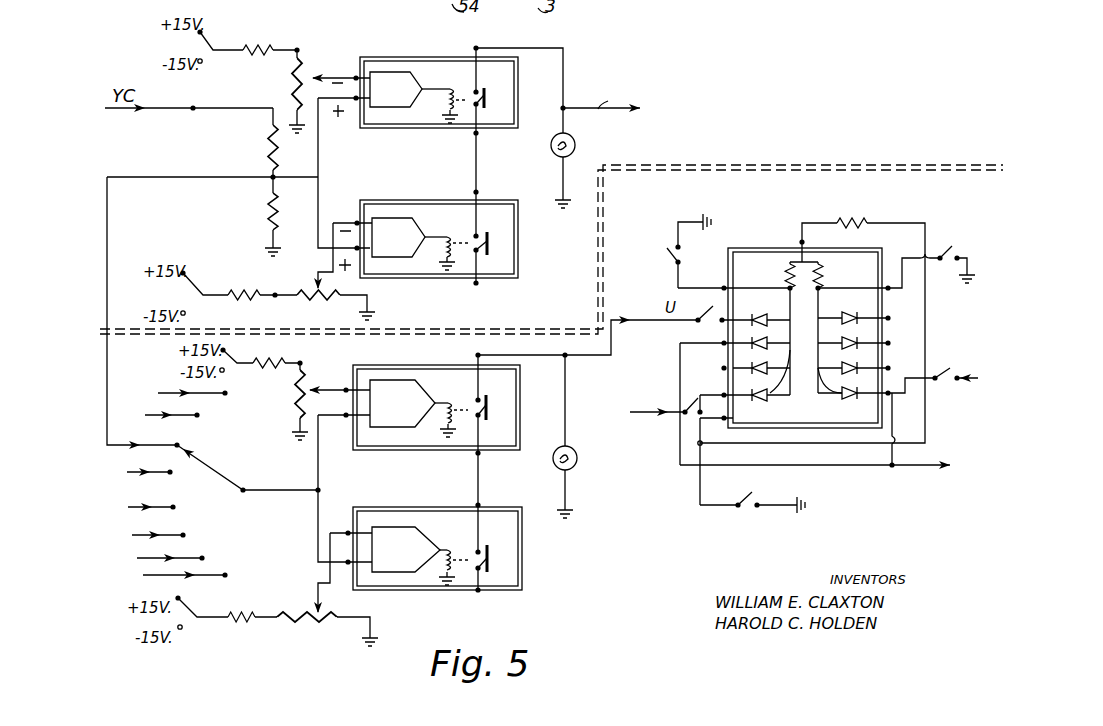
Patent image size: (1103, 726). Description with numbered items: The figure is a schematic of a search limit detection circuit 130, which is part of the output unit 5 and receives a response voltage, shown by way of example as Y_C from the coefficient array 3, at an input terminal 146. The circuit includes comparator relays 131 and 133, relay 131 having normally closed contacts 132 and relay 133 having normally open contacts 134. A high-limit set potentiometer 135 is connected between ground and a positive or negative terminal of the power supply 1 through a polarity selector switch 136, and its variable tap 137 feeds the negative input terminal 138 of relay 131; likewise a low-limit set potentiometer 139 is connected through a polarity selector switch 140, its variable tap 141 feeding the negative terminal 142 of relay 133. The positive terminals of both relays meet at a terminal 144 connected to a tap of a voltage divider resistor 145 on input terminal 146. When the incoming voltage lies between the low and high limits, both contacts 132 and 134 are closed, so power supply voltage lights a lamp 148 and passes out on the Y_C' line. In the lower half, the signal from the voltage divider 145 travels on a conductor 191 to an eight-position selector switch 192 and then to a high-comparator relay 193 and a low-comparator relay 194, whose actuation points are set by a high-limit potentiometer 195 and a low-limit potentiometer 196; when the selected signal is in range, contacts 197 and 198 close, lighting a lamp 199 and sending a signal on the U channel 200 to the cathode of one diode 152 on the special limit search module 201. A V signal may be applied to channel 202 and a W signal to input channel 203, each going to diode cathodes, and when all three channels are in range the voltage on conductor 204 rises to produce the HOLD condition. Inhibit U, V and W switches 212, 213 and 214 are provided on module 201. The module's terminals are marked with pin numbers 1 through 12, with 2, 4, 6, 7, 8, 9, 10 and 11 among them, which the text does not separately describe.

The search limit detection circuit 130 is at (630, 72).
The comparator relay 131 is at (447, 57).
The normally closed contacts 132 is at (485, 95).
The comparator relay 133 is at (412, 218).
The normally open contacts 134 is at (489, 245).
The high-limit set potentiometer 135 is at (298, 48).
The polarity selector switch 136 is at (204, 33).
The variable tap 137 is at (314, 76).
The negative input terminal 138 is at (359, 74).
The low-limit set potentiometer 139 is at (331, 302).
The polarity selector switch 140 is at (186, 274).
The variable tap 141 is at (316, 289).
The negative terminal 142 is at (358, 221).
The terminal 144 is at (318, 180).
The voltage divider resistor 145 is at (272, 150).
The input terminal 146 is at (195, 108).
The lamp 148 is at (552, 143).
The diode 152 is at (772, 355).
The conductor 191 is at (107, 254).
The eight-position selector switch 192 is at (214, 470).
The high-comparator relay 193 is at (433, 393).
The low-comparator relay 194 is at (415, 527).
The high-limit potentiometer 195 is at (302, 375).
The low-limit potentiometer 196 is at (332, 627).
The contacts 197 is at (487, 405).
The contacts 198 is at (489, 559).
The lamp 199 is at (577, 459).
The U channel 200 is at (586, 360).
The special limit search module 201 is at (811, 370).
The channel 202 is at (950, 376).
The input channel 203 is at (652, 412).
The conductor 204 is at (765, 467).
The Inhibit U switch 212 is at (670, 254).
The Inhibit V switch 213 is at (943, 256).
The Inhibit W switch 214 is at (752, 514).
The power supply 1 is at (910, 421).
The logic unit pin 2 is at (900, 371).
The coefficient array 3 is at (900, 346).
The logic unit pin 4 is at (900, 321).
The output unit 5 is at (879, 272).
The logic unit pin 6 is at (812, 330).
The logic unit pin 7 is at (716, 359).
The logic unit pin 8 is at (715, 460).
The logic unit pin 9 is at (712, 395).
The logic unit pin 10 is at (734, 278).
The logic unit pin 11 is at (714, 310).
The logic unit pin 12 is at (706, 395).